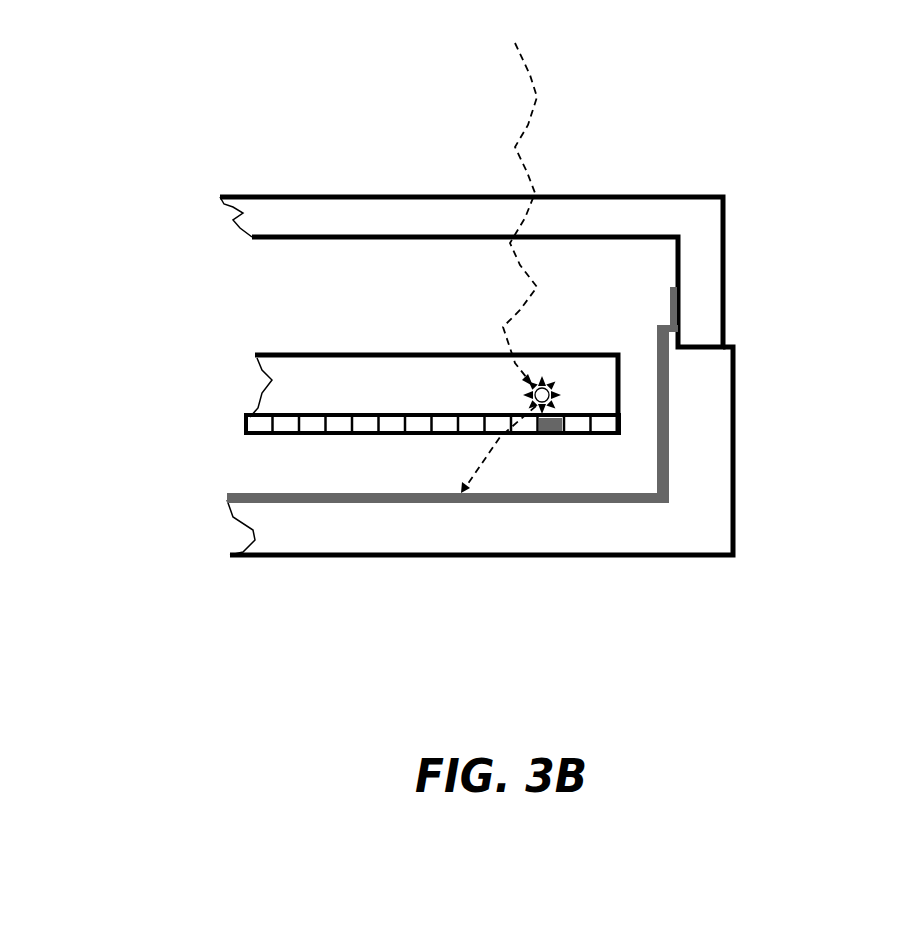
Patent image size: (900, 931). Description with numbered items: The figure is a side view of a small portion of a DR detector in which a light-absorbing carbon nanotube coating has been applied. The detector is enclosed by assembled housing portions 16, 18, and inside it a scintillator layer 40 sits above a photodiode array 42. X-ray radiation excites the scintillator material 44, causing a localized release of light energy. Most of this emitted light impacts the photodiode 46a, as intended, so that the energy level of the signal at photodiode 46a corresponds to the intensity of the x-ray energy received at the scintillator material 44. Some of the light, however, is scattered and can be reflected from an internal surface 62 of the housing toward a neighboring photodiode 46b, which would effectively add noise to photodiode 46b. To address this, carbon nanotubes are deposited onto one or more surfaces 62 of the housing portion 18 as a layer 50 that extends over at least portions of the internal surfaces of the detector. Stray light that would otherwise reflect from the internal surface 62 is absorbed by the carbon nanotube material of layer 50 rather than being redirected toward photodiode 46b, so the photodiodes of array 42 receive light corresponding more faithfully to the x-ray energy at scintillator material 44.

The housing portion 16 is at (471, 234).
The housing portion 18 is at (519, 451).
The scintillator layer 40 is at (337, 399).
The photodiode array 42 is at (247, 422).
The scintillator material 44 is at (550, 387).
The photodiode 46a is at (550, 435).
The photodiode 46b is at (363, 433).
The layer 50 is at (670, 390).
The internal surface 62 is at (227, 500).